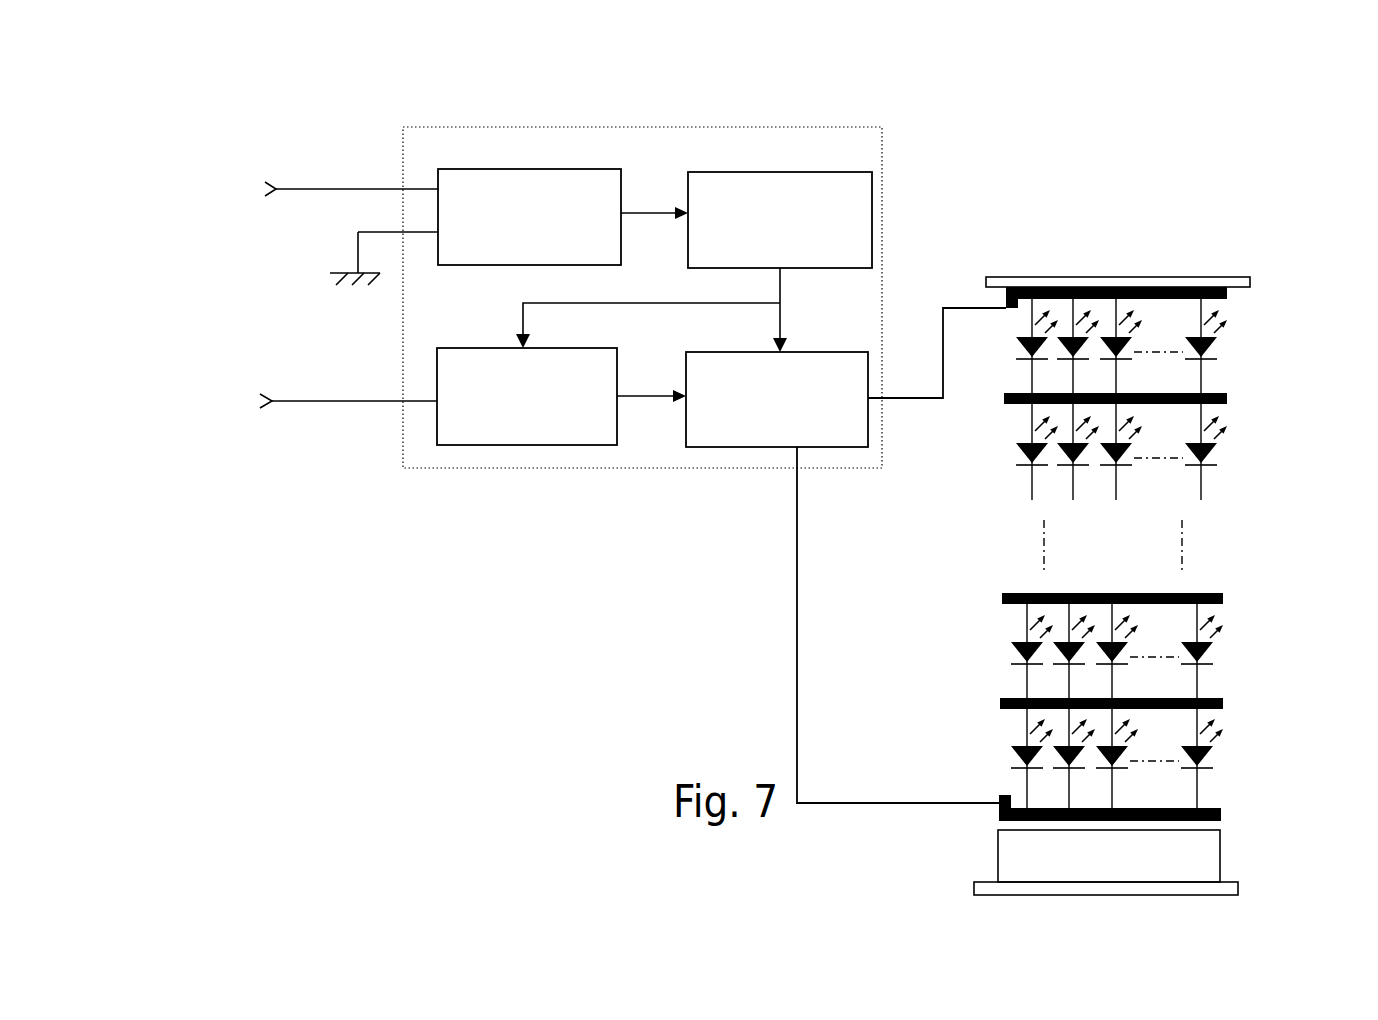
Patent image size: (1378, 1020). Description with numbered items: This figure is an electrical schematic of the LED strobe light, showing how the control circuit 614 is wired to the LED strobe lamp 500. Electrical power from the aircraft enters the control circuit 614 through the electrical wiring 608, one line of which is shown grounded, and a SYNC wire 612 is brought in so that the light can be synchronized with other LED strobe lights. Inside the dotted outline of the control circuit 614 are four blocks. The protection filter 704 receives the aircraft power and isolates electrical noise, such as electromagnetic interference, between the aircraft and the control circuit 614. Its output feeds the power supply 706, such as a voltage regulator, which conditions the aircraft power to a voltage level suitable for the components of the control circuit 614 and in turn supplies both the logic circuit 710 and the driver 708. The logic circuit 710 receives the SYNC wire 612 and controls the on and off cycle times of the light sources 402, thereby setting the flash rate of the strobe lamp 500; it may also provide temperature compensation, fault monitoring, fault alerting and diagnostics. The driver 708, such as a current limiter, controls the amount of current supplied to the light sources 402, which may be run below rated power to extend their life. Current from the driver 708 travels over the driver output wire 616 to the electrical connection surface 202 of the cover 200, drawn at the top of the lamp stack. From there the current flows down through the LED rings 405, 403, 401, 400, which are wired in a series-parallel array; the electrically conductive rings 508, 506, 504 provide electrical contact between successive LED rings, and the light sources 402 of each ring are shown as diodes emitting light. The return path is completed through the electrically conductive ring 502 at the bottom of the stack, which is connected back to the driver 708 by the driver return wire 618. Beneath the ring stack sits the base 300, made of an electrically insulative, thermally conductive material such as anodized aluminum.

The cover 200 is at (1175, 277).
The electrical connection surface 202 is at (1228, 301).
The base 300 is at (1238, 890).
The LED ring 400 is at (985, 756).
The LED ring 401 is at (985, 650).
The light source 402 is at (1203, 757).
The LED ring 403 is at (993, 463).
The LED ring 405 is at (1231, 356).
The LED strobe lamp 500 is at (1085, 553).
The electrically conductive ring 502 is at (1221, 808).
The electrically conductive ring 504 is at (1223, 709).
The electrically conductive ring 506 is at (1223, 604).
The electrically conductive ring 508 is at (1227, 404).
The electrical wiring 608 is at (348, 188).
The SYNC wire 612 is at (325, 401).
The control circuit 614 is at (402, 337).
The driver output wire 616 is at (958, 308).
The driver return wire 618 is at (795, 642).
The protection filter 704 is at (523, 169).
The power supply 706 is at (872, 202).
The driver 708 is at (723, 447).
The logic circuit 710 is at (465, 444).